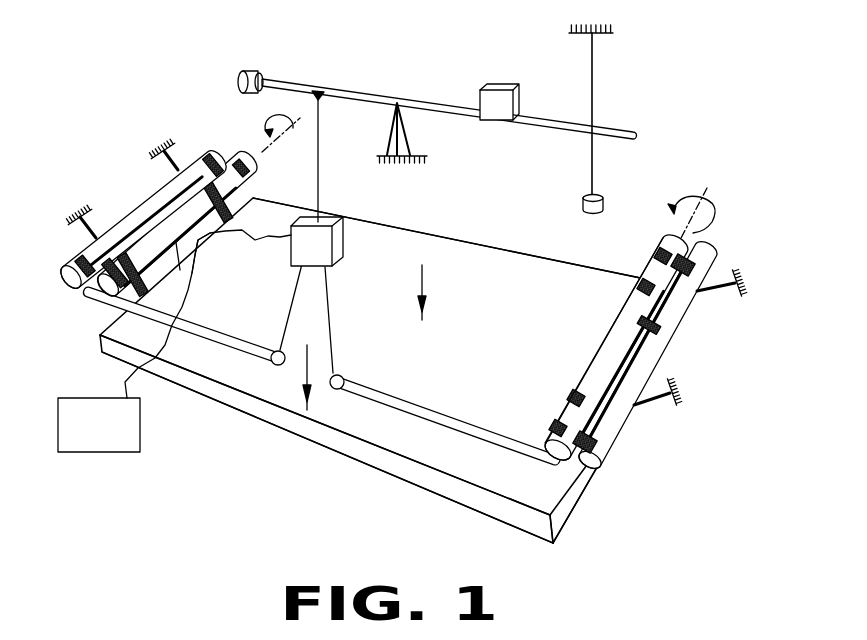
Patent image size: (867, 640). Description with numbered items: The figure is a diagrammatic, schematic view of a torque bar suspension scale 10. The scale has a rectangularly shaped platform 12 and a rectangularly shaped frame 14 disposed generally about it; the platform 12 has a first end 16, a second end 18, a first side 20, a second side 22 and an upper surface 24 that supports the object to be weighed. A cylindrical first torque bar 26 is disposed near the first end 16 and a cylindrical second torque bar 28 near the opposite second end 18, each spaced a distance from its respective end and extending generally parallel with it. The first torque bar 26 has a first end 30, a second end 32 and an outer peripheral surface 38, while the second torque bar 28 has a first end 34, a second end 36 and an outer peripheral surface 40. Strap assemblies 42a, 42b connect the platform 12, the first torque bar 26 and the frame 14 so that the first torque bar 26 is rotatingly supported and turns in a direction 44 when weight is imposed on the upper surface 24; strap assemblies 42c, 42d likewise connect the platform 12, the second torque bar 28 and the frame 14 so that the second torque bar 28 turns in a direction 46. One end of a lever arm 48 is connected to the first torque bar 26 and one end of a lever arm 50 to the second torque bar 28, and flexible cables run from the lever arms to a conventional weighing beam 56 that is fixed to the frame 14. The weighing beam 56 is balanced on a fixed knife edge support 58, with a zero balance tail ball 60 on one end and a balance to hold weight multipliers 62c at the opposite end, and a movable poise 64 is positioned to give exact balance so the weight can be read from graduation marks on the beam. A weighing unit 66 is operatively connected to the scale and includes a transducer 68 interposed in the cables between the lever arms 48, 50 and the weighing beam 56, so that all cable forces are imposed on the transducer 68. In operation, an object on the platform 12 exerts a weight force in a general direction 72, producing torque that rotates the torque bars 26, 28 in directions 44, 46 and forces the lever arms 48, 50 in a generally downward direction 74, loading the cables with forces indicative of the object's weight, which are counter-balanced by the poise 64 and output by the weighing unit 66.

The torque bar suspension scale 10 is at (648, 170).
The platform 12 is at (373, 428).
The frame 14 is at (152, 148).
The first end 16 is at (200, 238).
The second end 18 is at (572, 503).
The first side 20 is at (433, 236).
The second side 22 is at (303, 432).
The upper surface 24 is at (267, 387).
The first torque bar 26 is at (157, 228).
The second torque bar 28 is at (623, 336).
The first end 30 is at (250, 150).
The second end 32 is at (92, 291).
The first end 34 is at (660, 243).
The second end 36 is at (535, 509).
The outer peripheral surface 38 is at (175, 222).
The outer peripheral surface 40 is at (598, 372).
The strap assembly 42a is at (213, 152).
The strap assembly 42b is at (80, 255).
The strap assembly 42c is at (640, 278).
The strap assembly 42d is at (548, 407).
The direction 44 is at (277, 120).
The direction 46 is at (706, 203).
The lever arm 48 is at (203, 337).
The lever arm 50 is at (437, 422).
The weighing beam 56 is at (364, 95).
The fixed knife edge support 58 is at (410, 122).
The zero balance tail ball 60 is at (257, 70).
The balance to hold weight multipliers 62c is at (583, 205).
The movable poise 64 is at (497, 84).
The weighing unit 66 is at (140, 447).
The transducer 68 is at (334, 262).
The direction 72 is at (425, 291).
The direction 74 is at (310, 378).